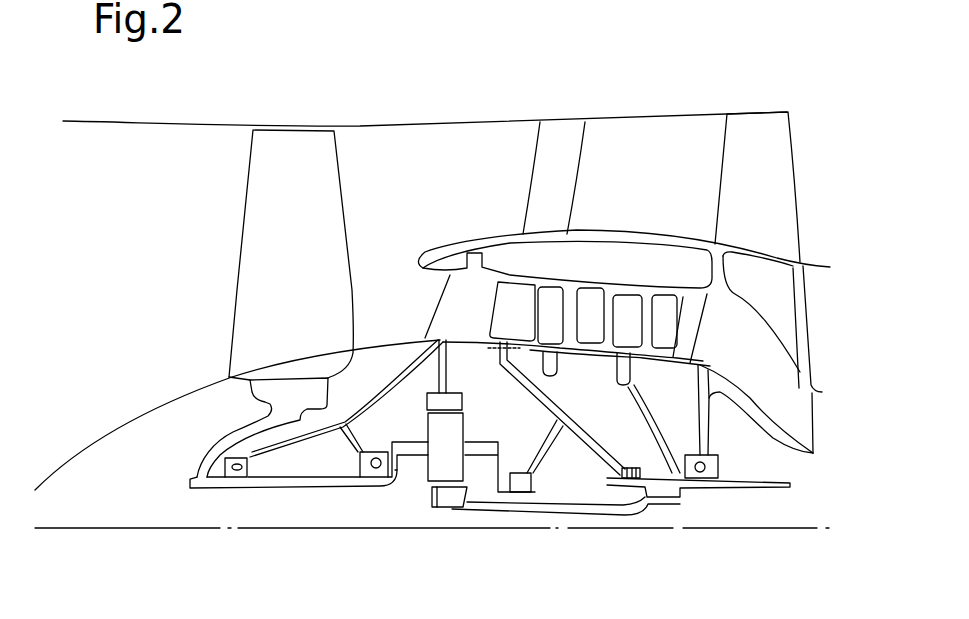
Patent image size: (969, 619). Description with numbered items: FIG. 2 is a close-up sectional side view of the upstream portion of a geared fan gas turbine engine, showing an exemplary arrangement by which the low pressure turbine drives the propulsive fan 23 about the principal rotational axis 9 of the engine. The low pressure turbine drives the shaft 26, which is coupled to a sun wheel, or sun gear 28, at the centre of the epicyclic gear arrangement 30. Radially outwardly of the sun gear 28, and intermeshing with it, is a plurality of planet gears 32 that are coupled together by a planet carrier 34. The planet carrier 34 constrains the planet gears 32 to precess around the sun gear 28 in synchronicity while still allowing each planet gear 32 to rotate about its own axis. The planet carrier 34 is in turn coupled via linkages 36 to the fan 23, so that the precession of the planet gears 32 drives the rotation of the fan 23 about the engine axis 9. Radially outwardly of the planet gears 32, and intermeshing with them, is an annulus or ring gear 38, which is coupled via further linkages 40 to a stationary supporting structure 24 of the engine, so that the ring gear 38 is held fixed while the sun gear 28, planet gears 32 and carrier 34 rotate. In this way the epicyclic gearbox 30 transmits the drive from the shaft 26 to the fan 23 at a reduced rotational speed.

The principal rotational axis 9 is at (198, 530).
The propulsive fan 23 is at (255, 293).
The stationary supporting structure 24 is at (455, 300).
The shaft 26 is at (568, 510).
The sun gear 28 is at (443, 502).
The epicyclic gearbox 30 is at (402, 485).
The planet gears 32 is at (430, 471).
The planet carrier 34 is at (487, 475).
The linkages 36 is at (402, 470).
The ring gear 38 is at (427, 400).
The linkages 40 is at (453, 370).